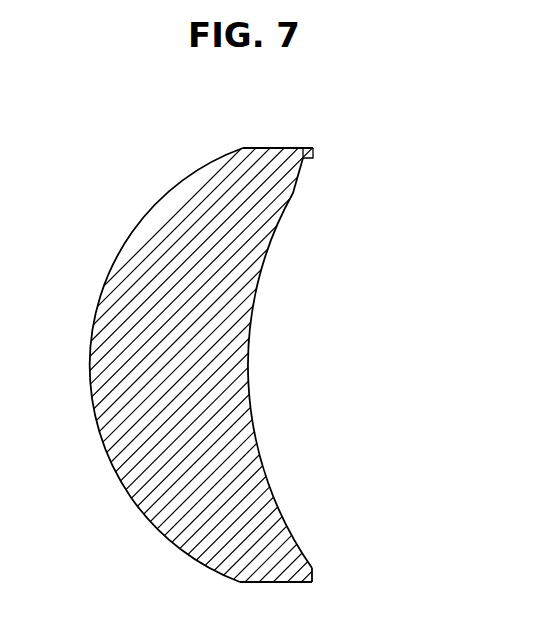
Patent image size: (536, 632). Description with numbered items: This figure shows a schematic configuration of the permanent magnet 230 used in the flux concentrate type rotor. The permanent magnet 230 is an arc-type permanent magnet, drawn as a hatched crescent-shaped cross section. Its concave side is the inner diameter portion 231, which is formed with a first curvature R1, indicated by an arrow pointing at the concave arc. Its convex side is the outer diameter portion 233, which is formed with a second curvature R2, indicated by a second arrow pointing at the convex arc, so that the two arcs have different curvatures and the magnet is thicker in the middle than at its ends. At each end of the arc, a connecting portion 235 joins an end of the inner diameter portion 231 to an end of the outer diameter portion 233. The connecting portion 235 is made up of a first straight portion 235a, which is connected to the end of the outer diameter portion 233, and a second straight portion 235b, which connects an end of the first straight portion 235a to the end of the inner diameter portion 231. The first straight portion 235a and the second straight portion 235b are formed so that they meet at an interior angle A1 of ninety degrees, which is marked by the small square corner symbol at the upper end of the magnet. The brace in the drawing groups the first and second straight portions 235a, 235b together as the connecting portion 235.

The permanent magnet 230 is at (268, 360).
The inner diameter portion 231 is at (268, 257).
The outer diameter portion 233 is at (123, 251).
The connecting portion 235 is at (356, 592).
The first straight portion 235a is at (280, 583).
The second straight portion 235b is at (315, 574).
The interior angle A1 is at (293, 162).
The first curvature R1 is at (258, 325).
The second curvature R2 is at (106, 367).